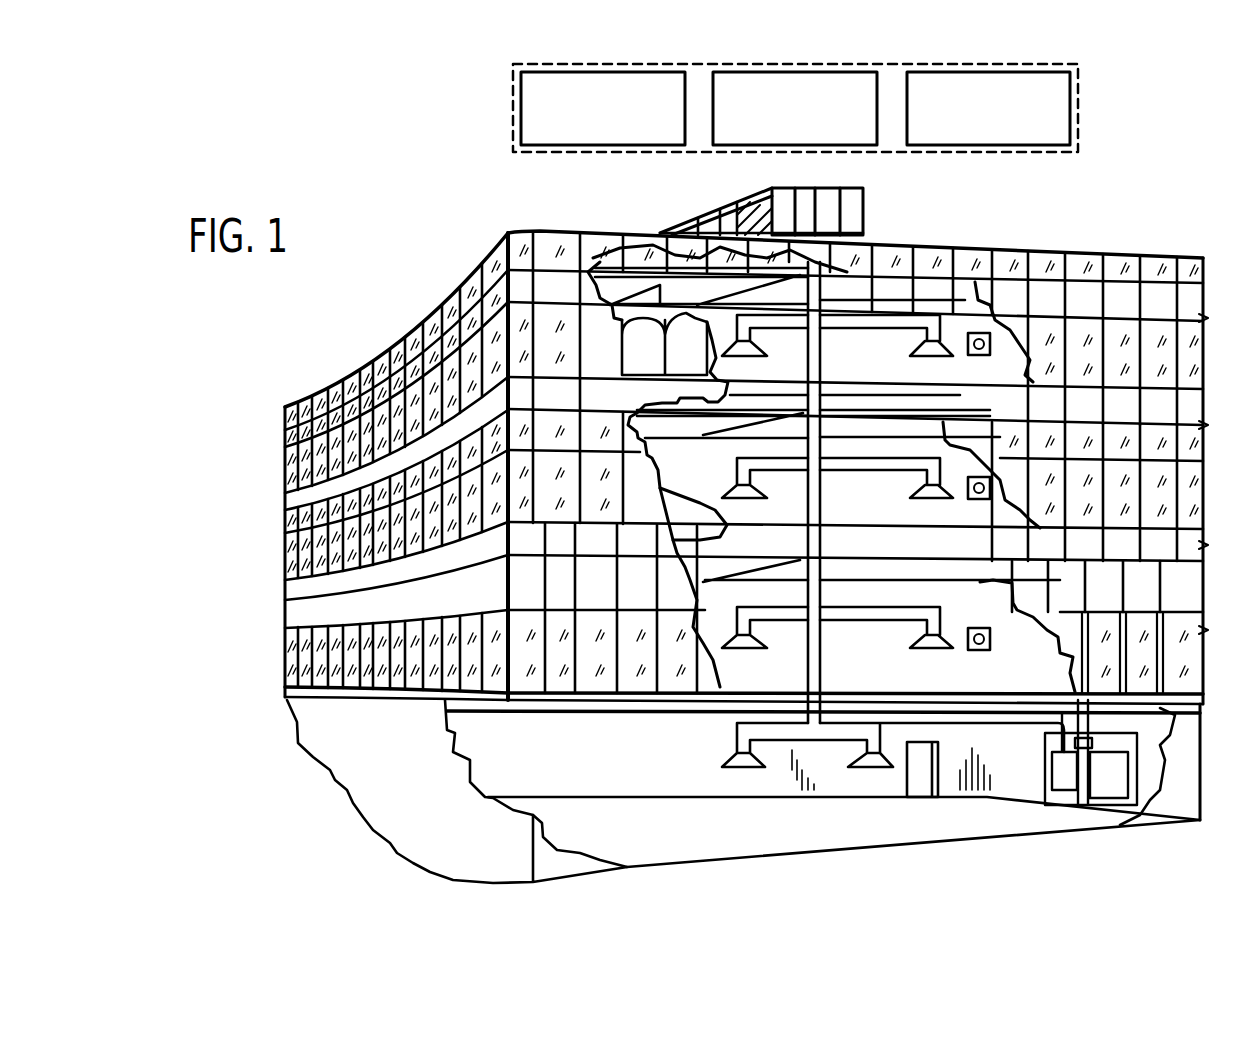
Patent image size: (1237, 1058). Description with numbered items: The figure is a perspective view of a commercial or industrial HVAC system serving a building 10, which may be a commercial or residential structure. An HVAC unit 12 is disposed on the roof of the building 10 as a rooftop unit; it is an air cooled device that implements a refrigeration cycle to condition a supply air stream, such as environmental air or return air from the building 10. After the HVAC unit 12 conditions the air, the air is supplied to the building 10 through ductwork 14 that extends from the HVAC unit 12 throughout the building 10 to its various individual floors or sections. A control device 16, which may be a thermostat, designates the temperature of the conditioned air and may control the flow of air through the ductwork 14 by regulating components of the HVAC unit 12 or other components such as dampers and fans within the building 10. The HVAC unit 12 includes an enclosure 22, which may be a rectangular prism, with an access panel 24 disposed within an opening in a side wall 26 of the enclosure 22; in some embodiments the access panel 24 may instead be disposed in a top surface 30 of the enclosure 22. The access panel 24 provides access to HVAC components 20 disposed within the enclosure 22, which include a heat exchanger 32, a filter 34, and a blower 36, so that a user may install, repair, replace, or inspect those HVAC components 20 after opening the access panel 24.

The building 10 is at (1088, 246).
The HVAC unit 12 is at (498, 201).
The ductwork 14 is at (822, 358).
The control device 16 is at (979, 358).
The HVAC components 20 is at (1082, 107).
The enclosure 22 is at (743, 198).
The access panel 24 is at (795, 153).
The side wall 26 is at (850, 216).
The top surface 30 is at (855, 188).
The heat exchanger 32 is at (600, 146).
The filter 34 is at (768, 146).
The blower 36 is at (982, 146).